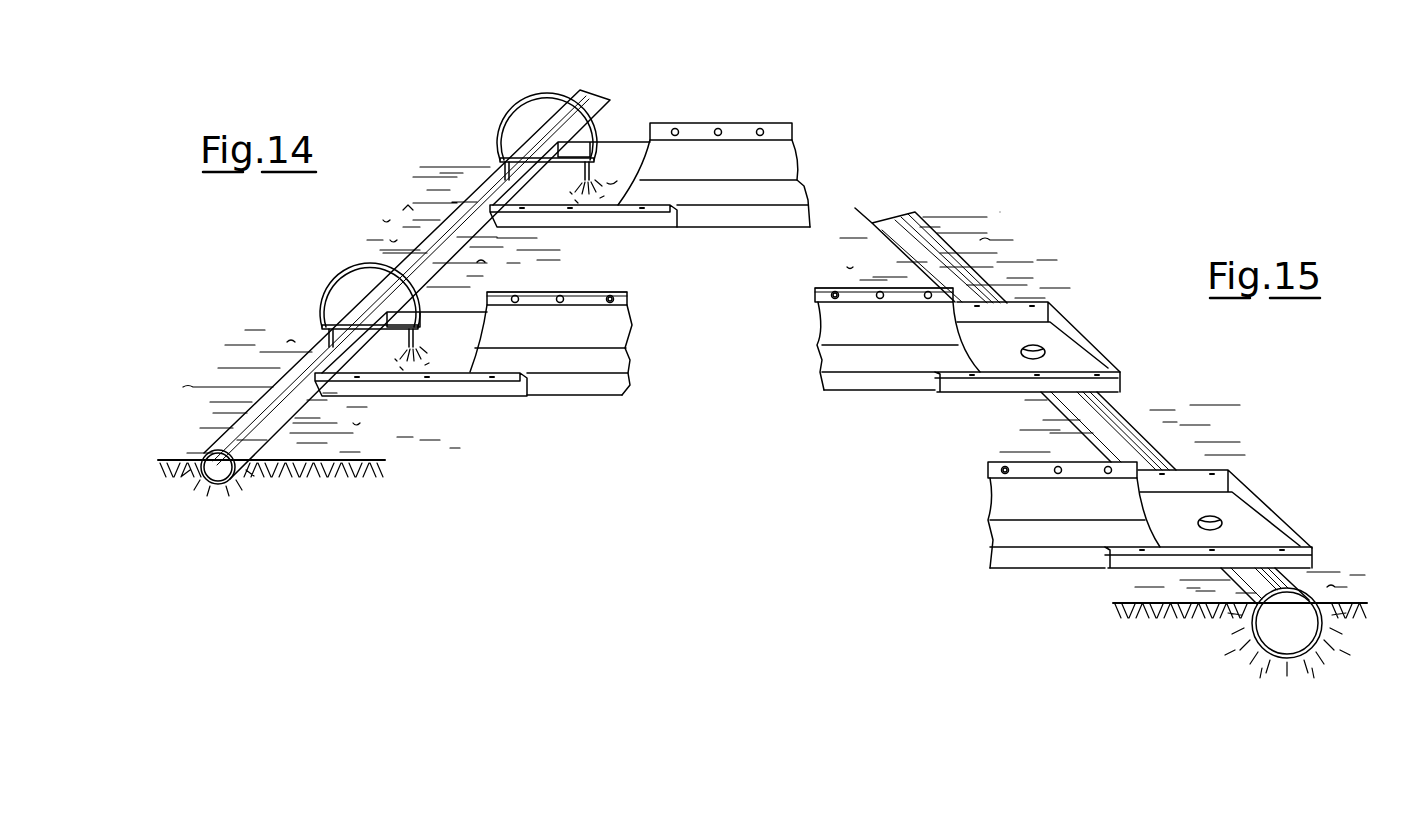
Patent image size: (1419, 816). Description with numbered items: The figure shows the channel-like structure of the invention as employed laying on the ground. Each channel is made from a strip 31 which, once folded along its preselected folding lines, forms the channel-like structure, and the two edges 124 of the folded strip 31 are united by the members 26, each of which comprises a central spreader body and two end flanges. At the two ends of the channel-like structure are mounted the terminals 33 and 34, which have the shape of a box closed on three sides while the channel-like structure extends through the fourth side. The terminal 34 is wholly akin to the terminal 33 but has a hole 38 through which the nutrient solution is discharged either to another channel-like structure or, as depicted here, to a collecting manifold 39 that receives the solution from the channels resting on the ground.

In FIG. 14, the member 26 is at (614, 300).
In FIG. 15, the member 26 is at (826, 297).
In FIG. 14, the strip 31 is at (805, 168).
In FIG. 15, the strip 31 is at (820, 347).
In FIG. 14, the terminal 33 is at (612, 195).
In FIG. 15, the terminal 34 is at (1002, 362).
In FIG. 15, the hole 38 is at (1025, 346).
In FIG. 15, the collecting manifold 39 is at (1130, 438).
In FIG. 14, the edge 124 is at (597, 296).
In FIG. 15, the edge 124 is at (828, 290).